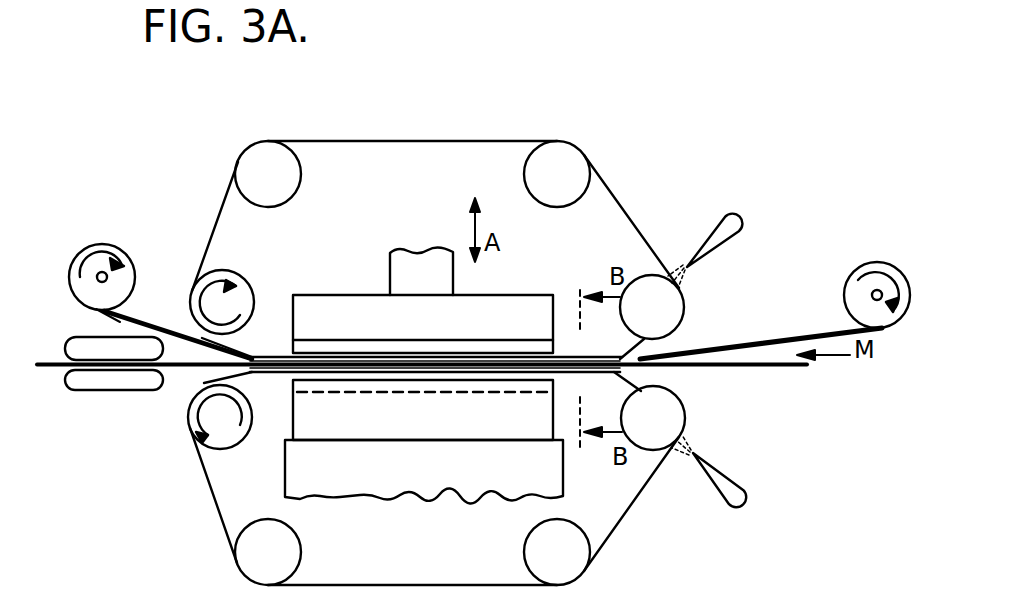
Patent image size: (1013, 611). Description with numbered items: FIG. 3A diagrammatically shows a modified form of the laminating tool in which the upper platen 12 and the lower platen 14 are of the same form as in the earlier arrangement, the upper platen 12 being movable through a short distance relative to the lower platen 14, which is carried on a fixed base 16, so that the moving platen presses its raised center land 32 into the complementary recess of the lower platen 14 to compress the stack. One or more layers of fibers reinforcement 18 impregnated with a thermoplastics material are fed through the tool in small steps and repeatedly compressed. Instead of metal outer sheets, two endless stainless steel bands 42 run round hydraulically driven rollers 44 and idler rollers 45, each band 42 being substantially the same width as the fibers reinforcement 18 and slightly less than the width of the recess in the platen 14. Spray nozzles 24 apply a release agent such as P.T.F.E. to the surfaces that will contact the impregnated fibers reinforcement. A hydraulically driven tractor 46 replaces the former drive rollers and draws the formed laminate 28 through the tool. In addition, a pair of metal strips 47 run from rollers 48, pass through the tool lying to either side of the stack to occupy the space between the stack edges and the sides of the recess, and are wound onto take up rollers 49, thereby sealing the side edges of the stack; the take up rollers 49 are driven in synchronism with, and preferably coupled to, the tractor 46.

The upper platen 12 is at (366, 333).
The lower platen 14 is at (392, 429).
The fixed base 16 is at (444, 479).
The fibers reinforcement 18 is at (733, 356).
The spray nozzles 24 is at (742, 233).
The formed laminate 28 is at (56, 368).
The land 32 is at (510, 347).
The endless stainless steel bands 42 is at (632, 222).
The hydraulically driven rollers 44 is at (232, 312).
The idler rollers 45 is at (258, 163).
The hydraulically driven tractor 46 is at (117, 381).
The metal strips 47 is at (140, 325).
The rollers 48 is at (857, 268).
The take up rollers 49 is at (84, 247).